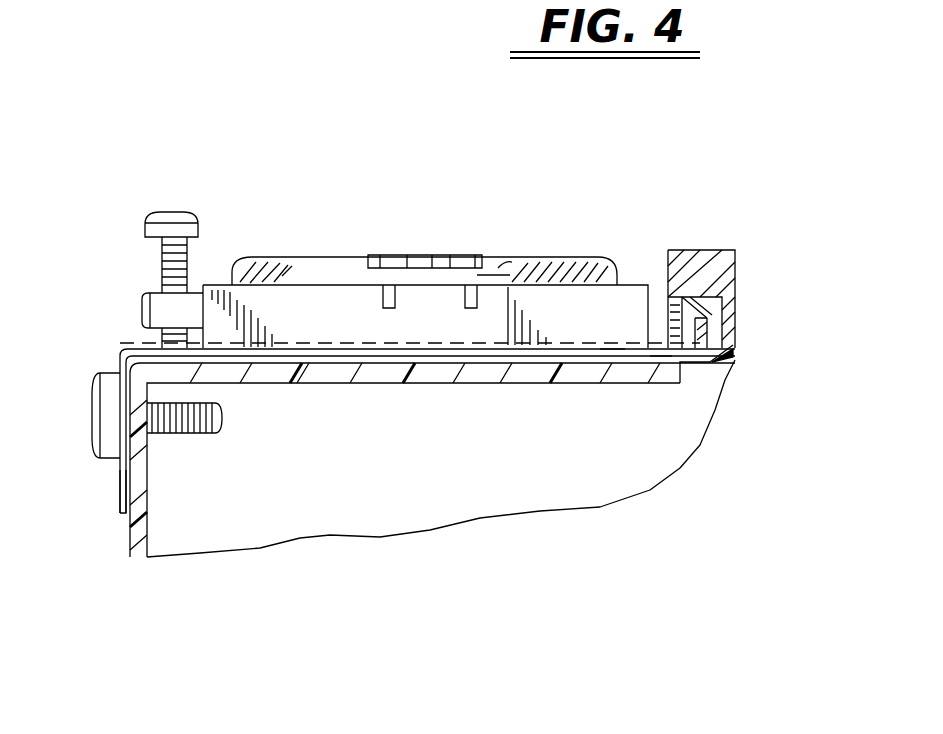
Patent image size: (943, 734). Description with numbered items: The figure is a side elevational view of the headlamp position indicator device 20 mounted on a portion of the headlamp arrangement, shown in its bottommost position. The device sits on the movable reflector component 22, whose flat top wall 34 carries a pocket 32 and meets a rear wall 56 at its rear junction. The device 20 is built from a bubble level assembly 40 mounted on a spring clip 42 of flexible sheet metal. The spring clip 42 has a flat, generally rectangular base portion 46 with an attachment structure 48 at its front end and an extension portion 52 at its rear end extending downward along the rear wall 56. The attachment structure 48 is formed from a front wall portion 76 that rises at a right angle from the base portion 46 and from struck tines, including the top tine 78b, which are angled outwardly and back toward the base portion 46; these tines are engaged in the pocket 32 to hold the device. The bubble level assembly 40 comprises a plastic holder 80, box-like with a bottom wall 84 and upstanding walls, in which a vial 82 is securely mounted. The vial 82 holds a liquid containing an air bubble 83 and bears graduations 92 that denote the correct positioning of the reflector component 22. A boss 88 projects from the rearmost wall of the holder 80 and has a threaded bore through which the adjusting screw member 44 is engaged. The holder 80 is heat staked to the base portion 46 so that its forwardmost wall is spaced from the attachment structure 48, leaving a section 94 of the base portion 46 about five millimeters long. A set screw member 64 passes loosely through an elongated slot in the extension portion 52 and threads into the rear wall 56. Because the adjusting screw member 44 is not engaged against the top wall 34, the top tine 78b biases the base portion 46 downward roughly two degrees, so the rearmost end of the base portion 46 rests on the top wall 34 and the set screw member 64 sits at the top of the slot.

The headlamp position indicator device 20 is at (300, 250).
The movable reflector component 22 is at (260, 375).
The pocket 32 is at (725, 270).
The top wall 34 is at (475, 376).
The bubble level assembly 40 is at (368, 255).
The spring clip 42 is at (393, 355).
The adjusting screw member 44 is at (178, 262).
The base portion 46 is at (287, 362).
The attachment structure 48 is at (735, 356).
The extension portion 52 is at (120, 493).
The rear wall 56 is at (137, 513).
The set screw member 64 is at (107, 433).
The front wall portion 76 is at (712, 334).
The top tine 78b is at (705, 308).
The plastic holder 80 is at (312, 323).
The vial 82 is at (584, 262).
The air bubble 83 is at (499, 262).
The bottom wall 84 is at (608, 343).
The boss 88 is at (143, 308).
The graduations 92 is at (437, 260).
The section 94 is at (660, 346).